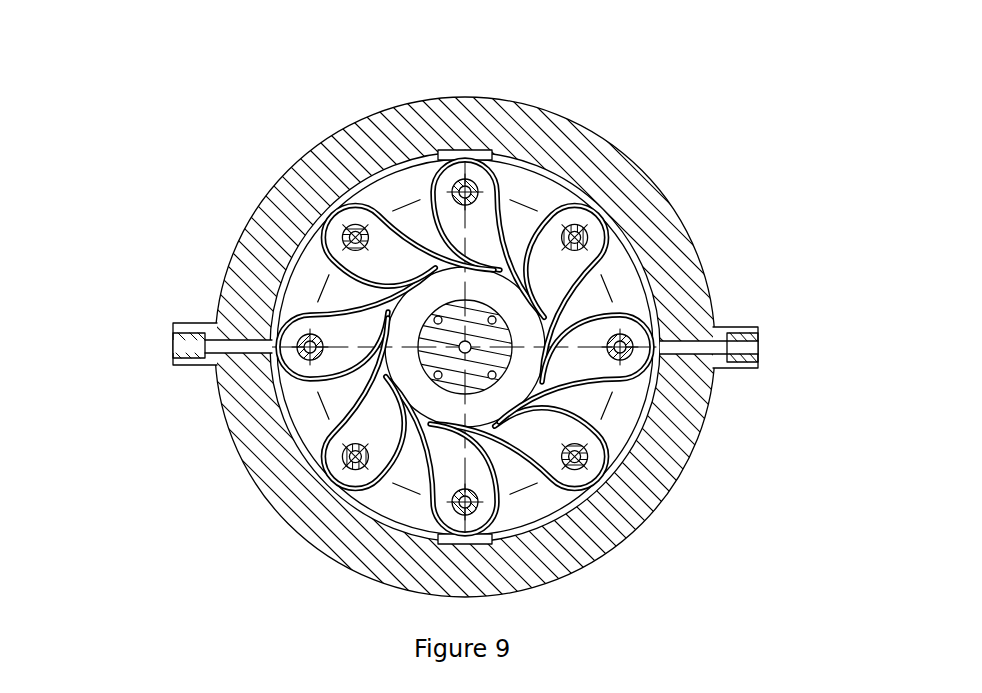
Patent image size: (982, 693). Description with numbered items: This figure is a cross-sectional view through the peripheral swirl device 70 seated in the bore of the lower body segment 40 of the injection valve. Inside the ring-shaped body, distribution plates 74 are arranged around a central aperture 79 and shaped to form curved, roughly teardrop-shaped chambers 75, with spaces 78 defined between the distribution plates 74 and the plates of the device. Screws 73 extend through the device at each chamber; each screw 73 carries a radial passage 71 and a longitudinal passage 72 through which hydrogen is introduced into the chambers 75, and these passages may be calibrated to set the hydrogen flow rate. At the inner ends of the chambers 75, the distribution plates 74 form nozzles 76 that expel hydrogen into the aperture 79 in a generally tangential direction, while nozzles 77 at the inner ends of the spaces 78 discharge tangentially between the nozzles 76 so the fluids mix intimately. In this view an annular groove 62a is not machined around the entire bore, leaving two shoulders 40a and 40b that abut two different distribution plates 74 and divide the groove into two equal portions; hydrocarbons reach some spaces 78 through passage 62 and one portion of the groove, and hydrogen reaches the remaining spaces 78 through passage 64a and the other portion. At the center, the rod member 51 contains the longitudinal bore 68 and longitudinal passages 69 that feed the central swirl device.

The lower body segment 40 is at (647, 223).
The shoulder 40a is at (440, 152).
The shoulder 40b is at (498, 541).
The rod member 51 is at (586, 445).
The passage 62 is at (151, 325).
The annular groove 62a is at (280, 392).
The passage 64a is at (740, 328).
The longitudinal bore 68 is at (463, 376).
The longitudinal passage 69 is at (562, 274).
The peripheral swirl device 70 is at (400, 533).
The radial passage 71 is at (308, 285).
The longitudinal passage 72 is at (363, 223).
The screw 73 is at (493, 318).
The distribution plate 74 is at (494, 315).
The curved chamber 75 is at (333, 432).
The nozzle 76 is at (434, 507).
The nozzle 77 is at (545, 487).
The space 78 is at (337, 333).
The aperture 79 is at (310, 340).